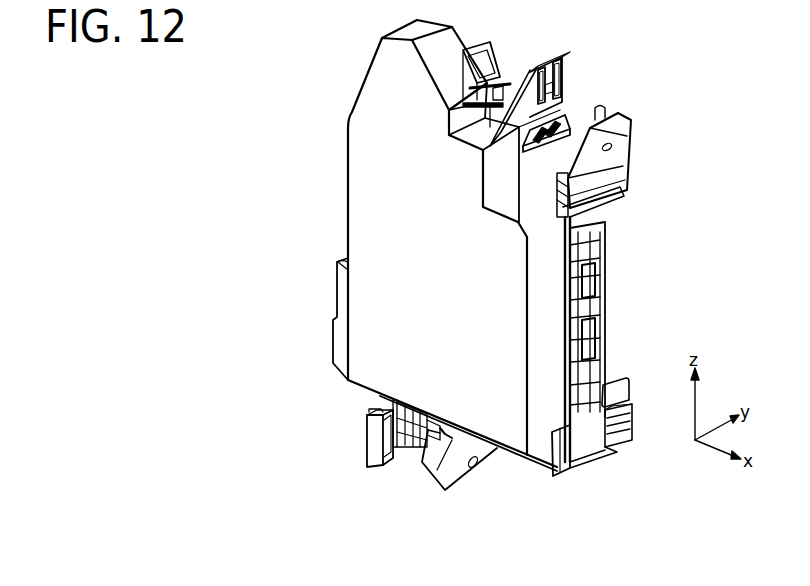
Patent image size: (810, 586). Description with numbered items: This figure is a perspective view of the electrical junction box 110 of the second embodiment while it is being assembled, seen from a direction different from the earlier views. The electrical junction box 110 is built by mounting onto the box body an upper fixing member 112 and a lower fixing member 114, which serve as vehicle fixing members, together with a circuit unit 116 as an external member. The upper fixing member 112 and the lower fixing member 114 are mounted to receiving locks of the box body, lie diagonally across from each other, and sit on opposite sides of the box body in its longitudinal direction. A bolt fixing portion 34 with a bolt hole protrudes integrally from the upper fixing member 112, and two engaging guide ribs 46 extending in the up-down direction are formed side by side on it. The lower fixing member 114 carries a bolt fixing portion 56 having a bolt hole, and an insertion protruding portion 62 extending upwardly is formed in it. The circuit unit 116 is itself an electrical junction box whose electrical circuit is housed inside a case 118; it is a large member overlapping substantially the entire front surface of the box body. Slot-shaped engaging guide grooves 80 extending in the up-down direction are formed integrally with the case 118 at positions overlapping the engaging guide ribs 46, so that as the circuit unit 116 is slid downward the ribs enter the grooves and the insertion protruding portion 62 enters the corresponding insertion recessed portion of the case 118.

The electrical junction box 110 is at (672, 42).
The upper fixing member 112 is at (648, 139).
The lower fixing member 114 is at (417, 480).
The circuit unit 116 is at (348, 98).
The case 118 is at (388, 203).
The engaging guide grooves 80 is at (547, 86).
The engaging guide ribs 46 is at (540, 135).
The bolt fixing portion 34 is at (618, 143).
The insertion protruding portion 62 is at (370, 433).
The bolt fixing portion 56 is at (466, 472).